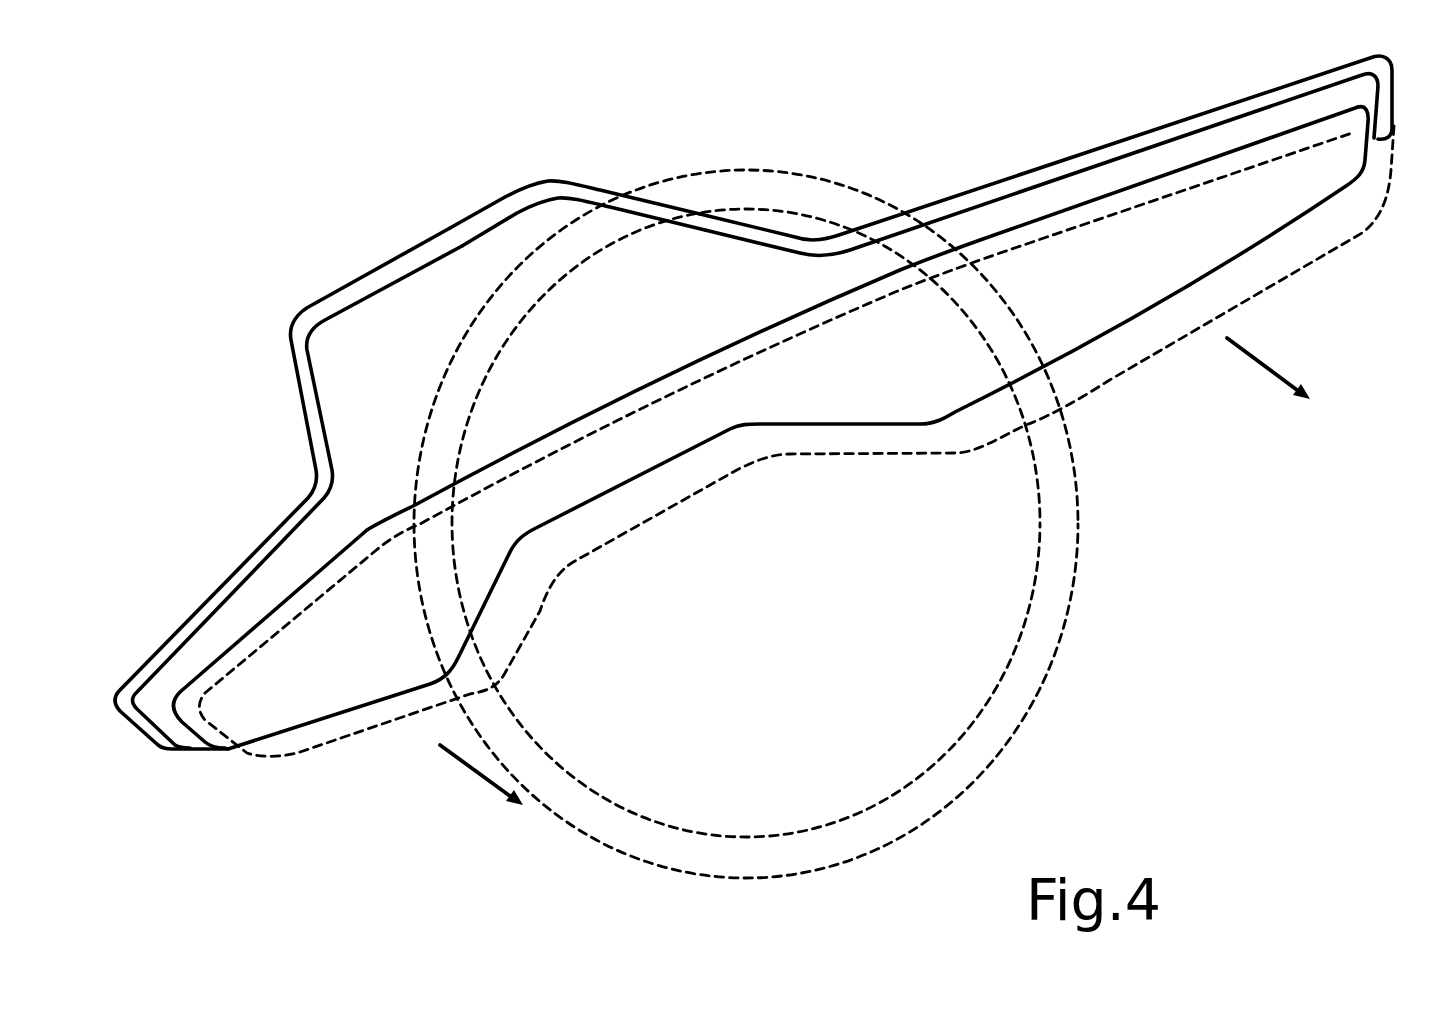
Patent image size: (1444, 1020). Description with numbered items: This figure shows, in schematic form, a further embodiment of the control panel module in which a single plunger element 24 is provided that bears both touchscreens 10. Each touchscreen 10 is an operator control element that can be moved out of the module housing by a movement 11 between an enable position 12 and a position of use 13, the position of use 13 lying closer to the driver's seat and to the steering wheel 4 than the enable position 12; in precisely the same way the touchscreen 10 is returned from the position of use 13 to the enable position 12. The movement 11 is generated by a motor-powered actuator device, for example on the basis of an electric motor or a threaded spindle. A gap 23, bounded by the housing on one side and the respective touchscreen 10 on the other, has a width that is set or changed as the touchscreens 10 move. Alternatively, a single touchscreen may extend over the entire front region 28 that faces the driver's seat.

The steering wheel 4 is at (1056, 514).
The touchscreen 10 is at (753, 402).
The movement 11 is at (1263, 370).
The enable position 12 is at (1148, 163).
The position of use 13 is at (1330, 243).
The gap 23 is at (486, 196).
The plunger element 24 is at (733, 273).
The front region 28 is at (884, 412).